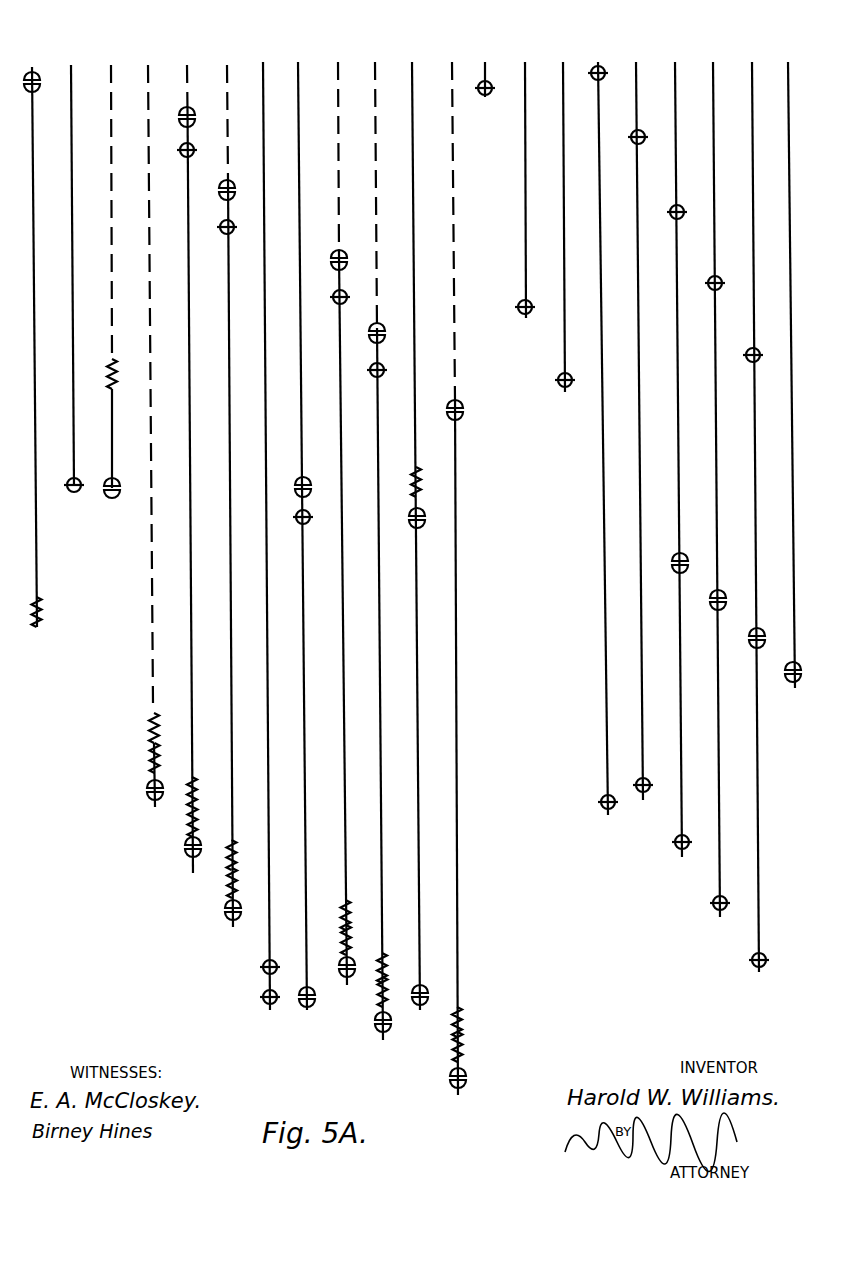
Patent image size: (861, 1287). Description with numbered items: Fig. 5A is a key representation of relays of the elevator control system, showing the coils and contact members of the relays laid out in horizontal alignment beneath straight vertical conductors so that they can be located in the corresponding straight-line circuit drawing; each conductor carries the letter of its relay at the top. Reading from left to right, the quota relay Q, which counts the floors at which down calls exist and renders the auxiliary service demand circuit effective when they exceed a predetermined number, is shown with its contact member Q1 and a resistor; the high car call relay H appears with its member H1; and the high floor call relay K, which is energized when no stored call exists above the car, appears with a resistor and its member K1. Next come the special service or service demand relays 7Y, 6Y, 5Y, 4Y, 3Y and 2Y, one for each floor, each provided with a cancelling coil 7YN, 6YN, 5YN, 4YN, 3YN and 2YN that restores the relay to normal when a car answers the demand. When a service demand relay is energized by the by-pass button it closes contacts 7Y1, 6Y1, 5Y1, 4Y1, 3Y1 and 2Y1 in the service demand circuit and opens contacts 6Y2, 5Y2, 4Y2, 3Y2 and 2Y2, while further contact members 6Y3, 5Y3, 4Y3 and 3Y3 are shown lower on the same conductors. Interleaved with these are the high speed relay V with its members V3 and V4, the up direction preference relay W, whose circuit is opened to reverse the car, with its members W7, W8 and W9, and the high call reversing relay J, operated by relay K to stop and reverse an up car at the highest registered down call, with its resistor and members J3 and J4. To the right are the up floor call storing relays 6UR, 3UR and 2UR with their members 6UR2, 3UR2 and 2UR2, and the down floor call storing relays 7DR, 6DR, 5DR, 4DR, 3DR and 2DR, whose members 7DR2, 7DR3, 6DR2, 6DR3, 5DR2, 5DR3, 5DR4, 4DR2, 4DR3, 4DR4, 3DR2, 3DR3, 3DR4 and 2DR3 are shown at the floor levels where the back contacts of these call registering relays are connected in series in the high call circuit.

The quota relay Q is at (37, 349).
The contact Q1 is at (42, 95).
The high car call relay H is at (74, 259).
The relay coil H1 is at (75, 506).
The high floor call relay K is at (120, 261).
The contact K1 is at (114, 505).
The service demand relay 7Y is at (145, 415).
The cancelling coil 7YN is at (142, 766).
The service demand relay contacts 7Y1 is at (152, 816).
The service demand relay 6Y is at (184, 448).
The cancelling coil 6YN is at (181, 815).
The service demand relay contacts 6Y1 is at (175, 112).
The service demand relay contacts 6Y2 is at (176, 171).
The contact 6Y3 is at (193, 875).
The service demand relay 5Y is at (224, 475).
The cancelling coil 5YN is at (220, 876).
The service demand relay contacts 5Y1 is at (215, 186).
The service demand relay contacts 5Y2 is at (216, 249).
The contact 5Y3 is at (233, 932).
The high speed relay V is at (266, 521).
The relay coil V3 is at (276, 951).
The relay coil V4 is at (270, 1015).
The up direction preference relay W is at (301, 521).
The contact W7 is at (293, 468).
The relay coil W8 is at (294, 529).
The contact W9 is at (307, 1019).
The service demand relay 4Y is at (336, 504).
The cancelling coil 4YN is at (334, 930).
The service demand relay contacts 4Y1 is at (328, 248).
The service demand relay contacts 4Y2 is at (329, 308).
The contact 4Y3 is at (342, 993).
The service demand relay 3Y is at (374, 532).
The cancelling coil 3YN is at (372, 986).
The service demand relay contacts 3Y1 is at (366, 320).
The service demand relay contacts 3Y2 is at (367, 381).
The contact 3Y3 is at (383, 1047).
The high call reversing relay J is at (407, 523).
The contact J3 is at (407, 529).
The contact J4 is at (417, 1012).
The service demand relay 2Y is at (452, 559).
The cancelling coil 2YN is at (448, 1043).
The service demand relay contacts 2Y1 is at (444, 395).
The service demand relay contacts 2Y2 is at (458, 1103).
The up floor call storing relay 6UR is at (488, 55).
The relay coil 6UR2 is at (487, 116).
The up floor call storing relay 3UR is at (528, 165).
The relay coil 3UR2 is at (528, 338).
The up floor call storing relay 2UR is at (566, 202).
The relay coil 2UR2 is at (565, 412).
The down floor call storing relay 7DR is at (601, 414).
The relay coil 7DR2 is at (588, 101).
The relay coil 7DR3 is at (609, 834).
The down floor call storing relay 6DR is at (639, 406).
The relay coil 6DR2 is at (628, 170).
The relay coil 6DR3 is at (645, 822).
The down floor call storing relay 5DR is at (678, 435).
The relay coil 5DR2 is at (666, 245).
The contact 5DR3 is at (669, 532).
The relay coil 5DR4 is at (686, 877).
The down floor call storing relay 4DR is at (716, 465).
The relay coil 4DR2 is at (706, 306).
The contact 4DR3 is at (707, 569).
The relay coil 4DR4 is at (722, 936).
The down floor call storing relay 3DR is at (755, 492).
The relay coil 3DR2 is at (744, 321).
The contact 3DR3 is at (746, 606).
The relay coil 3DR4 is at (758, 992).
The down floor call storing relay 2DR is at (791, 350).
The contact 2DR3 is at (791, 707).